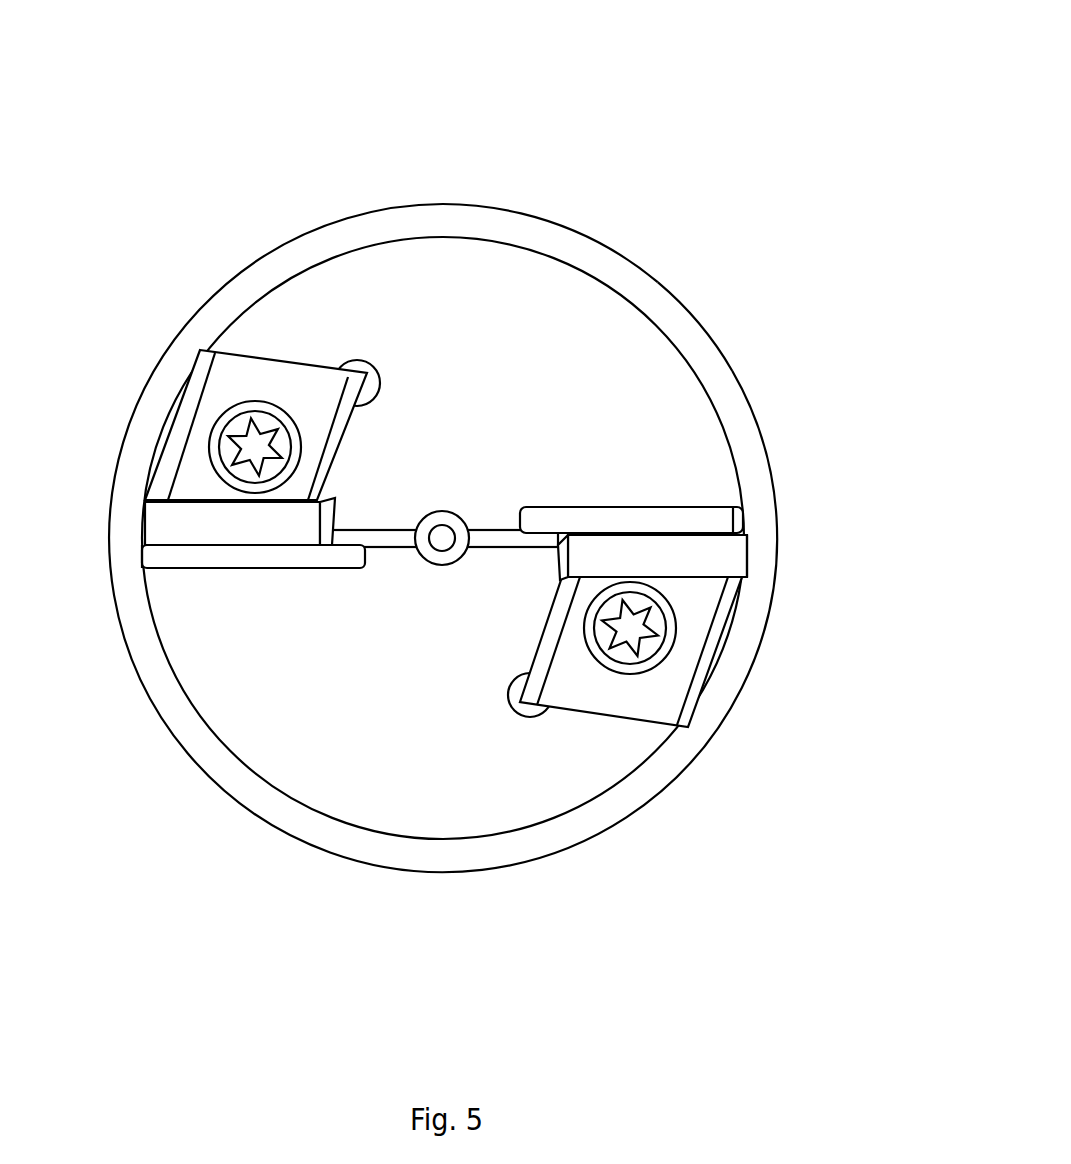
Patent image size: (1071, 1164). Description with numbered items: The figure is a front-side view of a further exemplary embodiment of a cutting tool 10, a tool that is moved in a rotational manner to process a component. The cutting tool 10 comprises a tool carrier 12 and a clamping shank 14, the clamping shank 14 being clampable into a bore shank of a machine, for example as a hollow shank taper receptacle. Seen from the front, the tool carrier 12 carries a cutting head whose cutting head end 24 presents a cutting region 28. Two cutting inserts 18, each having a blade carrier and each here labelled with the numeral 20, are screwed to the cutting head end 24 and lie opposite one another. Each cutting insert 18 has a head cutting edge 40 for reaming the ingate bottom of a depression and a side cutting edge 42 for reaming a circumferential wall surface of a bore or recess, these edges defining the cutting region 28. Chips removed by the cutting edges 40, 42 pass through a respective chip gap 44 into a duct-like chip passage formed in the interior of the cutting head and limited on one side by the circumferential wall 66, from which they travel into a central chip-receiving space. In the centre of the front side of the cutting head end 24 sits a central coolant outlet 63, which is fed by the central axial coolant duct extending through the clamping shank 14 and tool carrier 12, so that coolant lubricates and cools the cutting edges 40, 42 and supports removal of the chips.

The cutting tool 10 is at (474, 443).
The tool carrier 12 is at (445, 230).
The clamping shank 14 is at (552, 210).
The cutting insert 18 is at (474, 527).
The clamping jaw 20 is at (158, 525).
The cutting head end 24 is at (419, 646).
The cutting region 28 is at (441, 538).
The head cutting edge 40 is at (275, 547).
The side cutting edge 42 is at (120, 547).
The chip gap 44 is at (213, 552).
The central coolant outlet 63 is at (434, 533).
The circumferential wall 66 is at (682, 344).